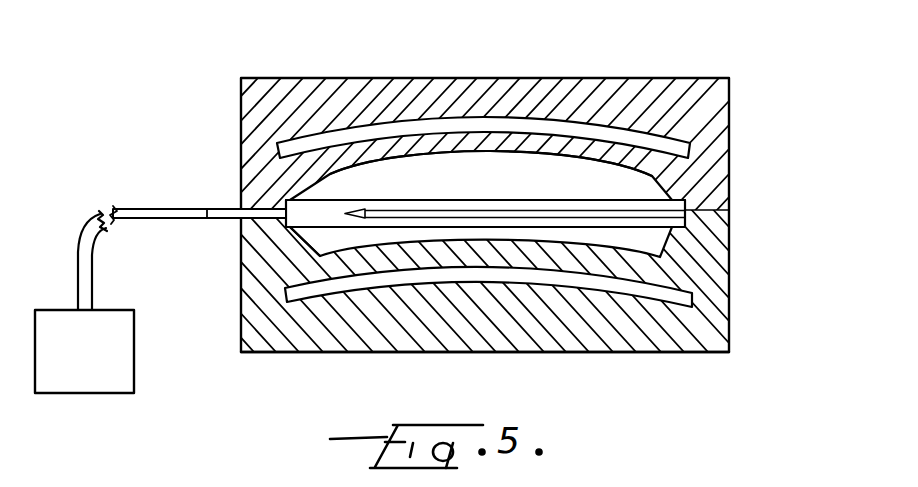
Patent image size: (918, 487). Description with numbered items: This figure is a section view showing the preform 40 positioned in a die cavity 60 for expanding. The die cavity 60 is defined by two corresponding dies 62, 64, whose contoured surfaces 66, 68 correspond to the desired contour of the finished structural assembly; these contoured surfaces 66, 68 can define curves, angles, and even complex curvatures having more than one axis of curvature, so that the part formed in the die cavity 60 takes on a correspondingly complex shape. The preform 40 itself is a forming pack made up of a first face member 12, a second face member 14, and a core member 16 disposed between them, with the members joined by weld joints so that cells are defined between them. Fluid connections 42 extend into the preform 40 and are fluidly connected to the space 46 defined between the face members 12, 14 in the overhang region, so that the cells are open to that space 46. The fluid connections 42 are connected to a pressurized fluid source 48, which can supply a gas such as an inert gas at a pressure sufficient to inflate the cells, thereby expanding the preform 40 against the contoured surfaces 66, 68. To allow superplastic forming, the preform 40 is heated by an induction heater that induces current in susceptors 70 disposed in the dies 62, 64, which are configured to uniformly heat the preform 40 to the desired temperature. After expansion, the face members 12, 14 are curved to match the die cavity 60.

The first face member 12 is at (640, 201).
The second face member 14 is at (648, 226).
The core member 16 is at (687, 212).
The preform 40 is at (537, 193).
The fluid connections 42 is at (220, 207).
The space 46 is at (327, 233).
The pressurized fluid source 48 is at (90, 378).
The die cavity 60 is at (444, 158).
The die 62 is at (731, 84).
The die 64 is at (732, 315).
The contoured surface 66 is at (394, 160).
The contoured surface 68 is at (388, 254).
The susceptors 70 is at (313, 142).